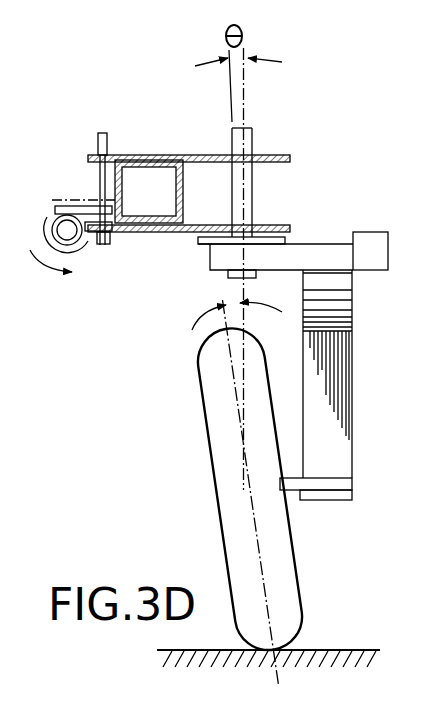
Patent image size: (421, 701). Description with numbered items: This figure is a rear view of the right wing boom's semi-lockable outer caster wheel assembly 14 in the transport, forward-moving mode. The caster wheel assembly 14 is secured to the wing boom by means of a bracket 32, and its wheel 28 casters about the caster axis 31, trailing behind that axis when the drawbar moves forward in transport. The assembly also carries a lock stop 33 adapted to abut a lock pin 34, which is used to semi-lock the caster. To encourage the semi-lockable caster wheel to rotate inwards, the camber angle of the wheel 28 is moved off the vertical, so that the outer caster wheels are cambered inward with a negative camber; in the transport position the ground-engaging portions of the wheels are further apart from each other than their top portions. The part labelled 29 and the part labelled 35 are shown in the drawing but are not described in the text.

The semi-lockable outer caster wheel assembly 14 is at (328, 205).
The wheel 28 is at (278, 566).
The roller mounting plate 29 is at (292, 486).
The caster axis 31 is at (254, 149).
The bracket 32 is at (292, 158).
The lock stop 33 is at (374, 262).
The lock pin 34 is at (92, 181).
The idler roller 35 is at (91, 258).